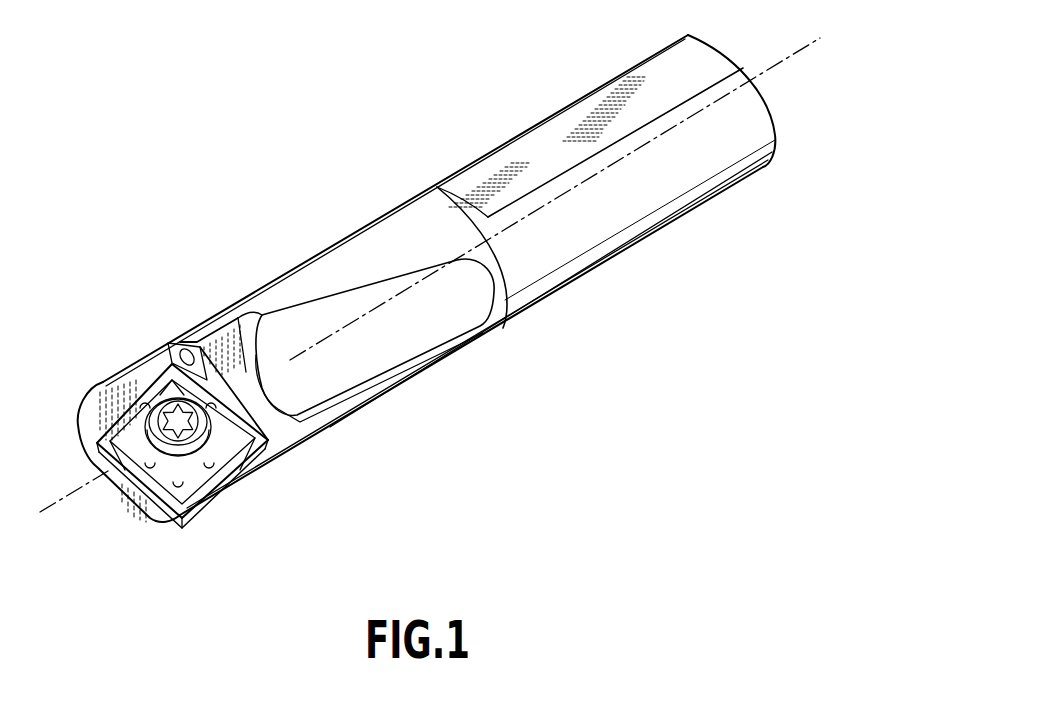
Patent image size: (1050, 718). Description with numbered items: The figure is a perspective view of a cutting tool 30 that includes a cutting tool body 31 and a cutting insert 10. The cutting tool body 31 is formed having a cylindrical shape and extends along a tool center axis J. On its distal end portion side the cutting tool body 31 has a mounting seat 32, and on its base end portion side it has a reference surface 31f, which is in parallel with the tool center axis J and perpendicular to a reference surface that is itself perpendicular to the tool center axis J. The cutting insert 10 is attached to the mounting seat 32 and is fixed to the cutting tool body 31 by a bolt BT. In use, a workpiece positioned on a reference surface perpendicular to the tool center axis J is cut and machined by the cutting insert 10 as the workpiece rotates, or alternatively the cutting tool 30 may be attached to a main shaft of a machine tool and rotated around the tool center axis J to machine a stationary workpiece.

The cutting insert 10 is at (208, 508).
The cutting tool 30 is at (547, 391).
The cutting tool body 31 is at (603, 233).
The reference surface 31f is at (531, 150).
The mounting seat 32 is at (113, 377).
The bolt BT is at (173, 400).
The tool center axis J is at (41, 492).